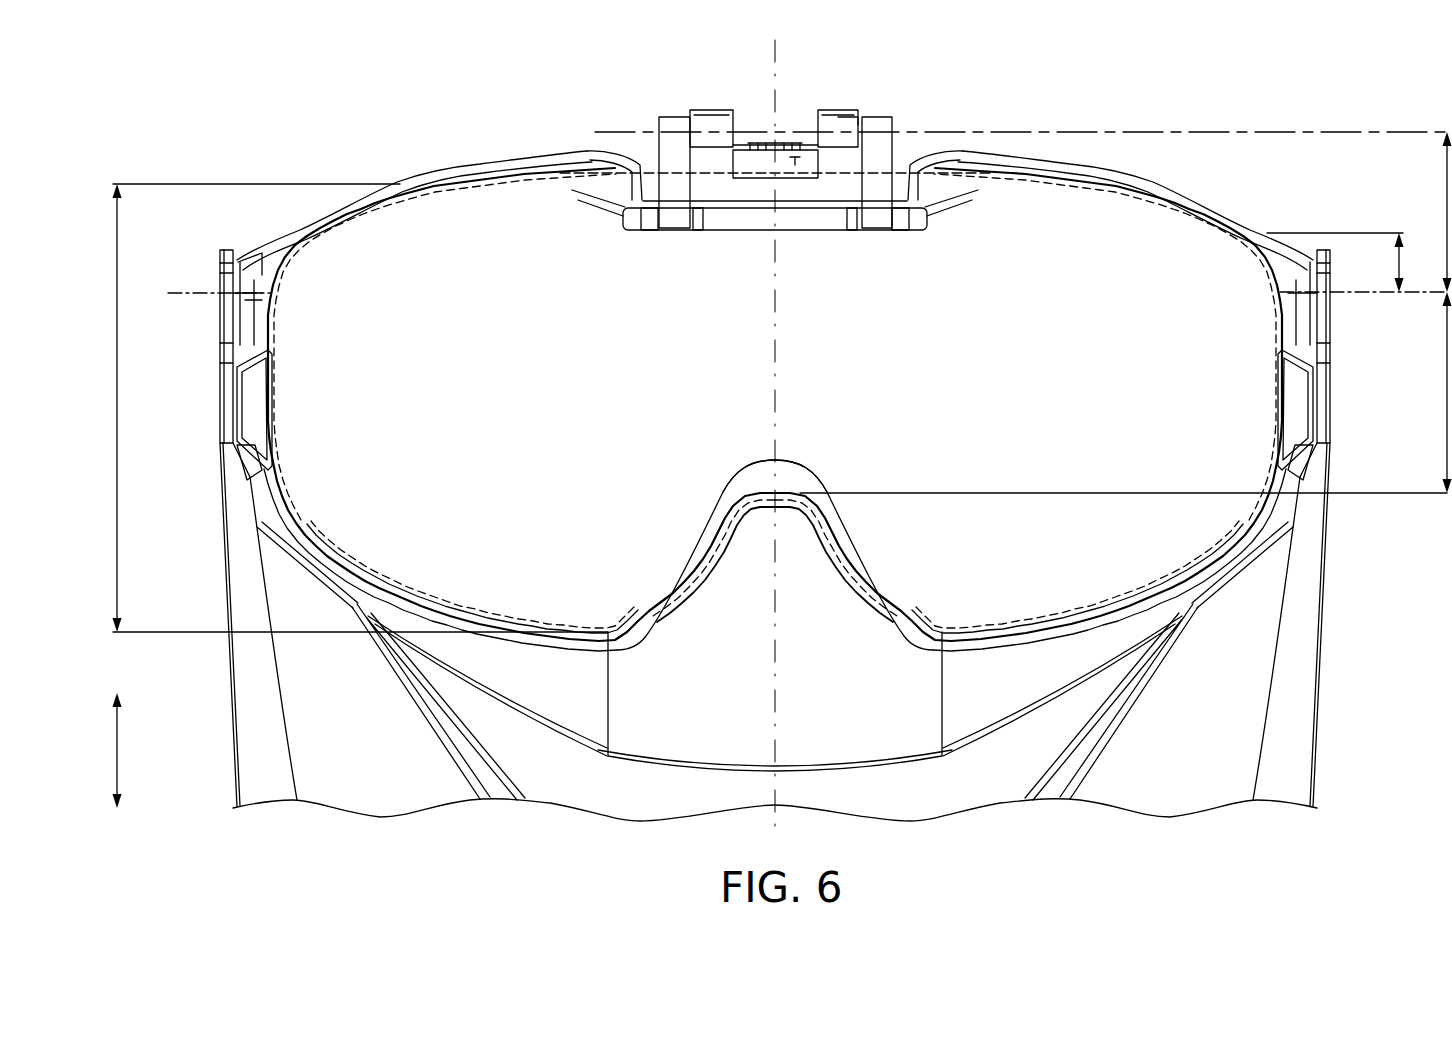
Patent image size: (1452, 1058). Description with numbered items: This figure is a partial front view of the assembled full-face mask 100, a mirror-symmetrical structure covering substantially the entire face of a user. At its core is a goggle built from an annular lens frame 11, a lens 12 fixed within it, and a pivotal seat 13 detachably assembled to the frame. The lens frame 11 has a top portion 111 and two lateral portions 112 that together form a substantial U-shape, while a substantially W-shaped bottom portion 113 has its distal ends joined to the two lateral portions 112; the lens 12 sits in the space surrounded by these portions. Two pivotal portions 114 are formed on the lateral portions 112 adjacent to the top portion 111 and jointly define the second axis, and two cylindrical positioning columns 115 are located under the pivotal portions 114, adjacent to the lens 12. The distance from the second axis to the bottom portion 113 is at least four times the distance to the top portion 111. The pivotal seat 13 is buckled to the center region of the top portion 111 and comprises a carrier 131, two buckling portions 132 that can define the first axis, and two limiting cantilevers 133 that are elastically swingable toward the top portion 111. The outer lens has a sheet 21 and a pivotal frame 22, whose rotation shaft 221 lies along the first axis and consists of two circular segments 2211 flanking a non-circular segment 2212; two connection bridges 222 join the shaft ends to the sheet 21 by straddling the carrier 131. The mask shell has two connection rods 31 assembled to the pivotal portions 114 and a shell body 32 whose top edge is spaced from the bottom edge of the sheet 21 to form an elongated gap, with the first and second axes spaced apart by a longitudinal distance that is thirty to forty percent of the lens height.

The assembled full-face mask 100 is at (264, 31).
The lens frame 11 is at (478, 162).
The top portion 111 is at (1045, 163).
The lateral portions 112 is at (1292, 324).
The bottom portion 113 is at (762, 507).
The pivotal portions 114 is at (243, 268).
The positioning columns 115 is at (262, 340).
The lens 12 is at (1225, 542).
The pivotal seat 13 is at (600, 146).
The carrier 131 is at (933, 143).
The buckling portions 132 is at (845, 115).
The limiting cantilevers 133 is at (795, 158).
The sheet 21 is at (262, 492).
The pivotal frame 22 is at (879, 114).
The rotation shaft 221 is at (774, 73).
The circular segments 2211 is at (832, 133).
The non-circular segment 2212 is at (753, 133).
The connection bridges 222 is at (673, 127).
The connection rods 31 is at (215, 310).
The shell body 32 is at (230, 698).